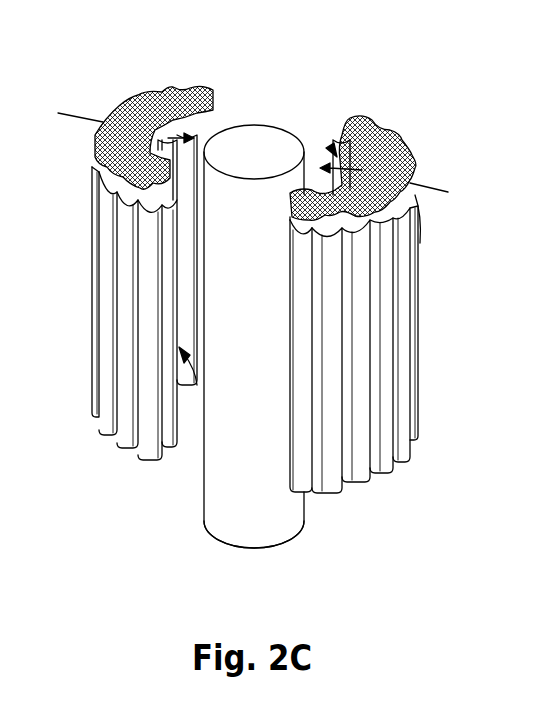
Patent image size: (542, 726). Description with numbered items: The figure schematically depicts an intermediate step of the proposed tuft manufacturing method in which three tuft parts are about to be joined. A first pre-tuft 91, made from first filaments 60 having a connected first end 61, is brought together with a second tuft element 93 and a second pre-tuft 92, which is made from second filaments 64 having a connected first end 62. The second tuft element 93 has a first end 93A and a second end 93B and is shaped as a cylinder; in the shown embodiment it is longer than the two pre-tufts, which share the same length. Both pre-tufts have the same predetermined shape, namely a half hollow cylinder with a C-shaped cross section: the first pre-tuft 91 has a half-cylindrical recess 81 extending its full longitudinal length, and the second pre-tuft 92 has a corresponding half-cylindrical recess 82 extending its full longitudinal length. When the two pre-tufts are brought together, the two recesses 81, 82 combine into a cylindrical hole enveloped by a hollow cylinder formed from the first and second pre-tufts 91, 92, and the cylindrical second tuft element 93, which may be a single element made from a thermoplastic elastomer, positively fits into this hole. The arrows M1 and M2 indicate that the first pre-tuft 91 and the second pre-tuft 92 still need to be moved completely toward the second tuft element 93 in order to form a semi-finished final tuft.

The first filaments 60 is at (123, 436).
The connected first end 61 is at (95, 157).
The connected first end 62 is at (412, 195).
The second filaments 64 is at (330, 460).
The half-cylindrical recess 81 is at (197, 385).
The half-cylindrical recess 82 is at (334, 154).
The first pre-tuft 91 is at (160, 96).
The second pre-tuft 92 is at (380, 147).
The second tuft element 93 is at (276, 316).
The first end 93A is at (255, 153).
The second end 93B is at (262, 553).
The arrow M1 is at (83, 120).
The arrow M2 is at (448, 192).